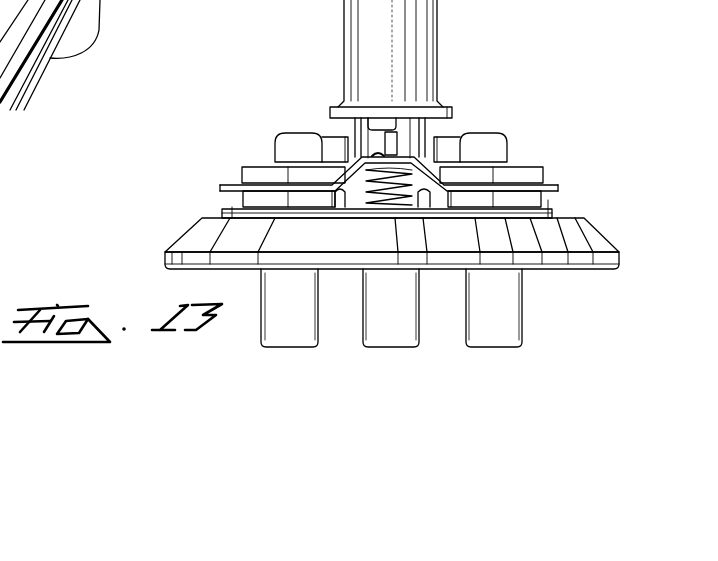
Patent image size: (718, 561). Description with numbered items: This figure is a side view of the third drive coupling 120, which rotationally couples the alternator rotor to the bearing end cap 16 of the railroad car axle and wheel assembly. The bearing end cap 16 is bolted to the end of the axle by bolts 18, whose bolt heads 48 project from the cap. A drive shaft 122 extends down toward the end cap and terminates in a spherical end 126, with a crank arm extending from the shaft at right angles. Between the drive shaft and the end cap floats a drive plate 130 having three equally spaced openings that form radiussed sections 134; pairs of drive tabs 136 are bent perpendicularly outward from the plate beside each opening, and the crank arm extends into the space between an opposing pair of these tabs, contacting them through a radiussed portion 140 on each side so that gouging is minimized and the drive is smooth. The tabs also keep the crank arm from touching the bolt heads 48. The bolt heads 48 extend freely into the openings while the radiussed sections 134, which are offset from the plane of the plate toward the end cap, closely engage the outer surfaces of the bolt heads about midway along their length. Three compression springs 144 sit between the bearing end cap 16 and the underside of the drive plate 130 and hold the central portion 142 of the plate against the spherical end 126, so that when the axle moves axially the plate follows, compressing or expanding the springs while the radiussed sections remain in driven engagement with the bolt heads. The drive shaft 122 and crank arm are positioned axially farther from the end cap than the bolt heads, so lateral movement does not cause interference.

The bearing end cap 16 is at (596, 232).
The bolts 18 is at (522, 318).
The bolt heads 48 is at (245, 196).
The third drive coupling 120 is at (413, 125).
The drive shaft 122 is at (440, 22).
The spherical end 126 is at (368, 165).
The drive plate 130 is at (409, 164).
The radiussed sections 134 is at (222, 185).
The drive tabs 136 is at (322, 136).
The radiussed portion 140 is at (398, 146).
The central portion 142 is at (378, 158).
The compression springs 144 is at (399, 190).